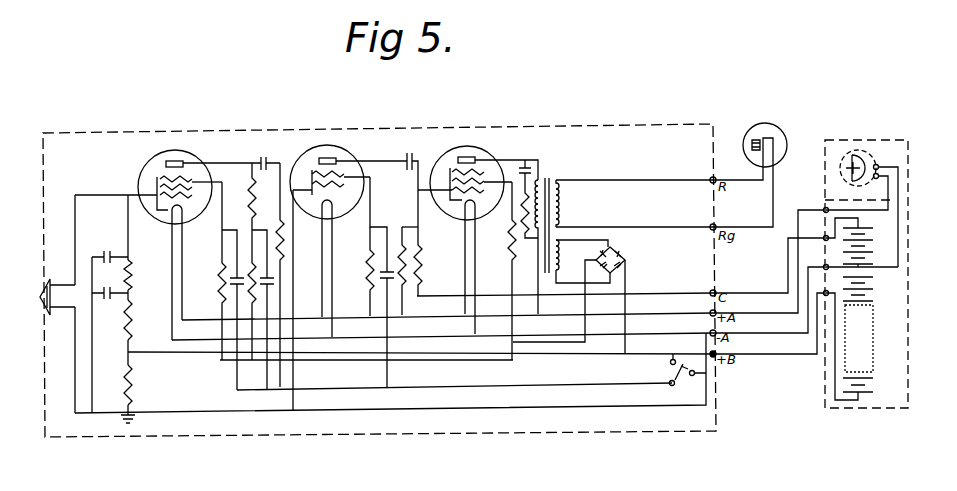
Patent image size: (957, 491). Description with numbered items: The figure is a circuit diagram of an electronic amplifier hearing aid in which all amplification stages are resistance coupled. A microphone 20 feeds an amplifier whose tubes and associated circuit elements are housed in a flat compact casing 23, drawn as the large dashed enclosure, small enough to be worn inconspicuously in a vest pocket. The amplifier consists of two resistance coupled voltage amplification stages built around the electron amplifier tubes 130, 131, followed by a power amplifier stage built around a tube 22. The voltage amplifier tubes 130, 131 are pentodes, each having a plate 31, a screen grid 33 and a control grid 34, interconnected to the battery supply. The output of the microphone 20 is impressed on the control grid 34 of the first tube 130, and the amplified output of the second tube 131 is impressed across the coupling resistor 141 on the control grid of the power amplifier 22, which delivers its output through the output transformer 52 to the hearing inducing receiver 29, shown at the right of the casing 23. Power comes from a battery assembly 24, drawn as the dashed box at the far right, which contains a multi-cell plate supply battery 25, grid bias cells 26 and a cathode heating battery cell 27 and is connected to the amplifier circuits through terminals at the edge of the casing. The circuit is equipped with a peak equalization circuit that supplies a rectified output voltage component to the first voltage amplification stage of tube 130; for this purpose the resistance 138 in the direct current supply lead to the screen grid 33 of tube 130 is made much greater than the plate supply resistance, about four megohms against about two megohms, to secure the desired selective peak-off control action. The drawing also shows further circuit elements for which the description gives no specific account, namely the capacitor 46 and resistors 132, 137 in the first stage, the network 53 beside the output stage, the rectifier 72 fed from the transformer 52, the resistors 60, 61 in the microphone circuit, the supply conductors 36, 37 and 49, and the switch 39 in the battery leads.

The microphone 20 is at (51, 299).
The power amplifier tube 22 is at (455, 158).
The casing 23 is at (462, 433).
The battery assembly 24 is at (893, 408).
The plate supply battery 25 is at (876, 351).
The grid bias cells 26 is at (876, 250).
The cathode heating battery cell 27 is at (852, 152).
The receiver 29 is at (770, 129).
The plate 31 is at (184, 161).
The screen grid 33 is at (194, 183).
The control grid 34 is at (186, 204).
The conductor 36 is at (448, 310).
The conductor 37 is at (448, 330).
The switch 39 is at (668, 378).
The coupling condenser 46 is at (258, 161).
The conductor 49 is at (524, 380).
The output transformer 52 is at (547, 178).
The condenser and resistor network 53 is at (520, 166).
The resistor 60 is at (125, 378).
The resistor 61 is at (125, 272).
The rectifier 72 is at (620, 258).
The first voltage amplifier tube 130 is at (150, 170).
The second voltage amplifier tube 131 is at (306, 158).
The resistor 132 is at (283, 266).
The resistor 137 is at (254, 244).
The screen grid supply resistance 138 is at (224, 244).
The coupling resistor 141 is at (401, 226).